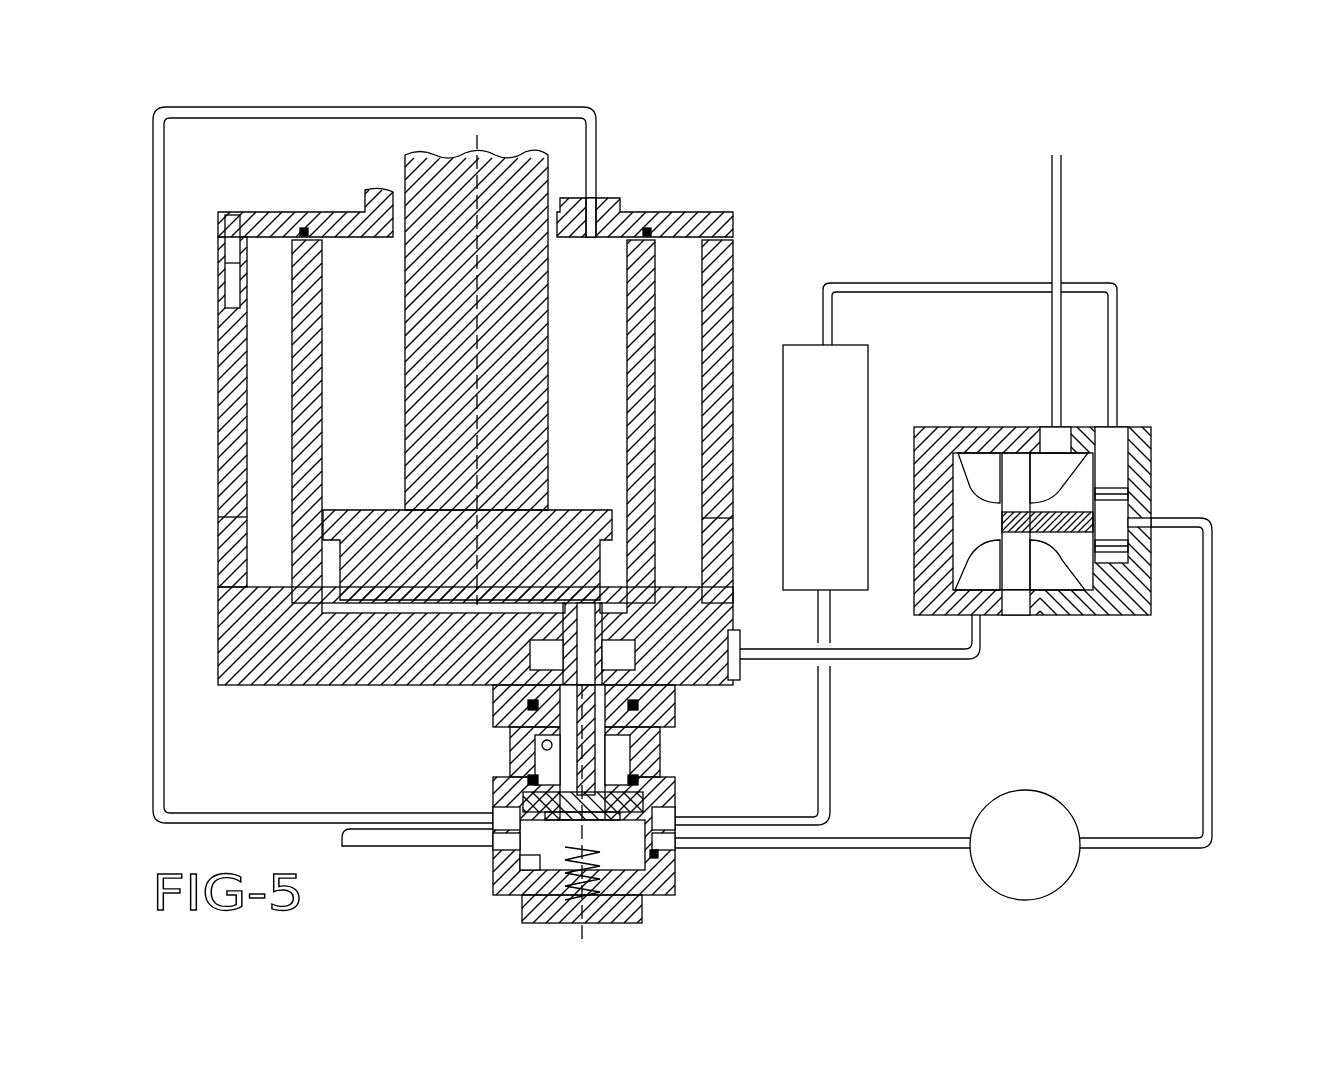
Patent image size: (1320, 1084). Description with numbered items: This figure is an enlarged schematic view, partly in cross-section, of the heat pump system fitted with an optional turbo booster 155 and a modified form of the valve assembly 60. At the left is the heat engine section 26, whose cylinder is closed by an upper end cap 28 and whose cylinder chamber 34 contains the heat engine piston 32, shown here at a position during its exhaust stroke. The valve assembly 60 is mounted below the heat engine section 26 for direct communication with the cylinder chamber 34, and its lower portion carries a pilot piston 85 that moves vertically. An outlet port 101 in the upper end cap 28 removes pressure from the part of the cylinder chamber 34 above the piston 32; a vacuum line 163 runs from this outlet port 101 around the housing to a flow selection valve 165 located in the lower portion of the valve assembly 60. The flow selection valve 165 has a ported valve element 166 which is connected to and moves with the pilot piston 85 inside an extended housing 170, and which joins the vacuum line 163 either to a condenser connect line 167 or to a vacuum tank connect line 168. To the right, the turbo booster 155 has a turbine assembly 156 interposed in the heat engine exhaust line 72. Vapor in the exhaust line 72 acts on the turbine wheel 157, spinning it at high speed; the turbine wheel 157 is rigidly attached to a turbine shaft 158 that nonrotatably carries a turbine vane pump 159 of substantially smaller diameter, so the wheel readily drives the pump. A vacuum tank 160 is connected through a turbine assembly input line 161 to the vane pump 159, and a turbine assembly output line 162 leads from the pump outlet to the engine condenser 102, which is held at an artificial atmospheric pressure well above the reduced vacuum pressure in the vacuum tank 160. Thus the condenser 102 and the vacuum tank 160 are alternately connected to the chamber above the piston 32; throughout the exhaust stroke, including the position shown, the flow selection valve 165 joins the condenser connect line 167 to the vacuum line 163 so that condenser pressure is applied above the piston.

The heat engine section 26 is at (742, 333).
The upper end cap 28 is at (712, 226).
The heat engine piston 32 is at (358, 527).
The cylinder chamber 34 is at (597, 364).
The valve assembly 60 is at (670, 755).
The heat engine exhaust line 72 is at (1062, 202).
The pilot piston 85 is at (637, 803).
The outlet port 101 is at (602, 212).
The engine condenser 102 is at (848, 480).
The turbo booster 155 is at (1175, 460).
The turbine assembly 156 is at (1097, 622).
The turbine wheel 157 is at (1012, 600).
The turbine shaft 158 is at (1050, 545).
The turbine vane pump 159 is at (1112, 510).
The vacuum tank 160 is at (1048, 860).
The turbine assembly input line 161 is at (1212, 658).
The turbine assembly output line 162 is at (1118, 328).
The vacuum line 163 is at (340, 112).
The flow selection valve 165 is at (520, 868).
The ported valve element 166 is at (650, 838).
The condenser connect line 167 is at (825, 775).
The vacuum tank connect line 168 is at (875, 852).
The extended housing 170 is at (672, 856).